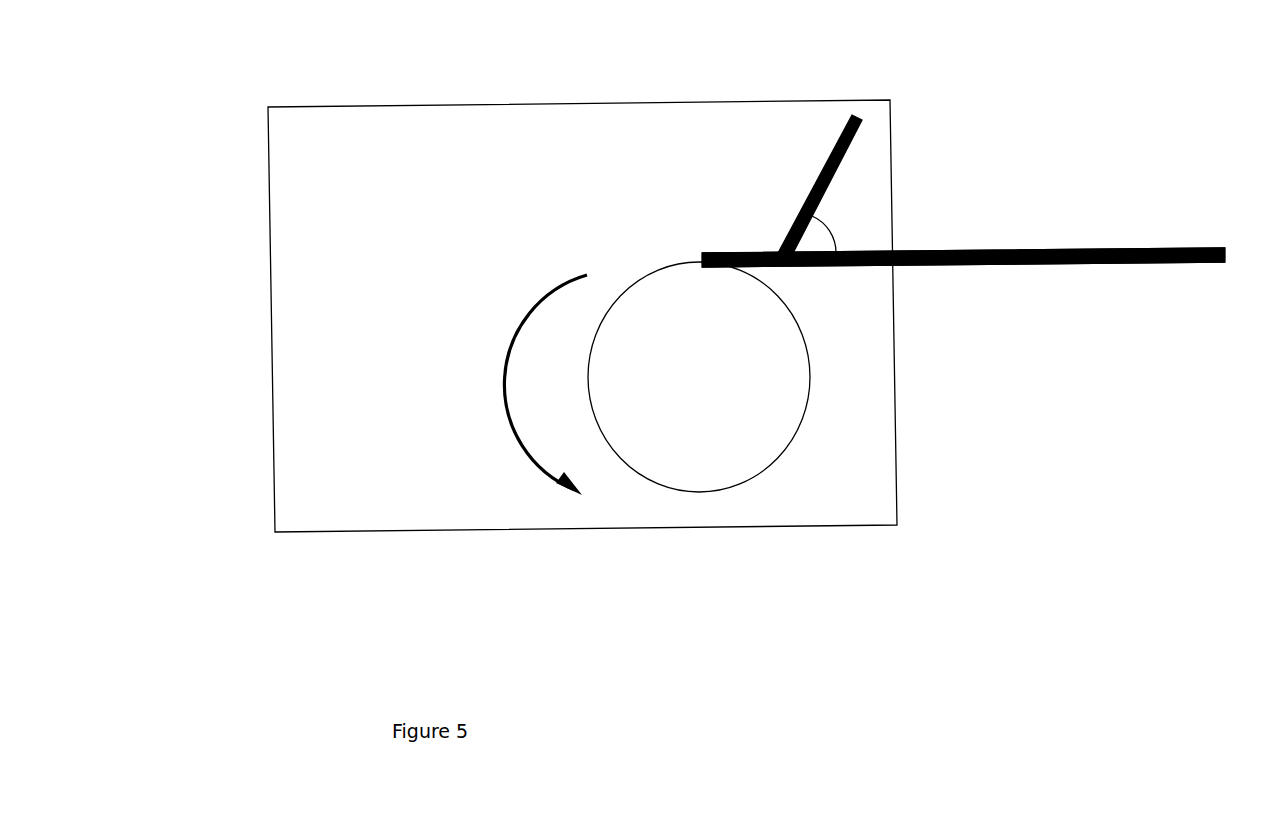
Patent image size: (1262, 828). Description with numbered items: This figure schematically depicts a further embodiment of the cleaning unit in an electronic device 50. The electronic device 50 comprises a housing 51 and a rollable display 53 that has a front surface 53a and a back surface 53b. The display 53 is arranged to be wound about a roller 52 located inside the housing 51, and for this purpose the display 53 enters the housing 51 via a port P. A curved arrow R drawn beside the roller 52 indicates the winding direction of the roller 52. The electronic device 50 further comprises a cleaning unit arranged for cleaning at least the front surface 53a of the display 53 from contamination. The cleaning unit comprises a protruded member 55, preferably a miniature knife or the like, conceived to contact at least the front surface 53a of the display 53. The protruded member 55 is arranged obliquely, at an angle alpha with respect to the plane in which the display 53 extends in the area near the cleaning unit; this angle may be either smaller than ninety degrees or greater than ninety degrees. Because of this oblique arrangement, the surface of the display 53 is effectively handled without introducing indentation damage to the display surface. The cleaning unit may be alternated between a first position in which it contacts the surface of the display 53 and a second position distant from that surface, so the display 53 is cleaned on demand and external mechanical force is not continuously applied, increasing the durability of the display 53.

The electronic device 50 is at (278, 30).
The housing 51 is at (457, 105).
The roller 52 is at (648, 277).
The rollable display 53 is at (1100, 250).
The front surface 53a is at (957, 253).
The back surface 53b is at (1043, 263).
The protruded member 55 is at (808, 197).
The port P is at (899, 243).
The rotation direction R is at (503, 390).